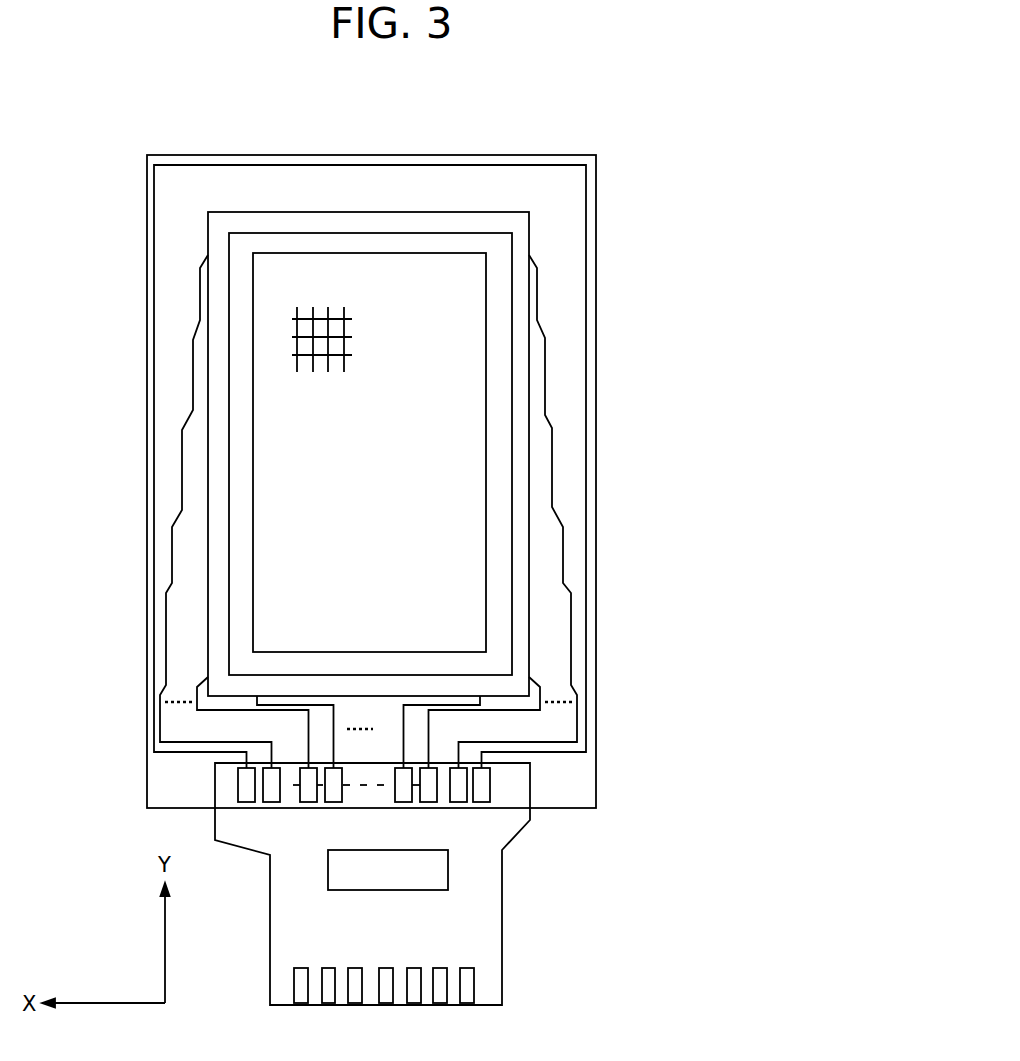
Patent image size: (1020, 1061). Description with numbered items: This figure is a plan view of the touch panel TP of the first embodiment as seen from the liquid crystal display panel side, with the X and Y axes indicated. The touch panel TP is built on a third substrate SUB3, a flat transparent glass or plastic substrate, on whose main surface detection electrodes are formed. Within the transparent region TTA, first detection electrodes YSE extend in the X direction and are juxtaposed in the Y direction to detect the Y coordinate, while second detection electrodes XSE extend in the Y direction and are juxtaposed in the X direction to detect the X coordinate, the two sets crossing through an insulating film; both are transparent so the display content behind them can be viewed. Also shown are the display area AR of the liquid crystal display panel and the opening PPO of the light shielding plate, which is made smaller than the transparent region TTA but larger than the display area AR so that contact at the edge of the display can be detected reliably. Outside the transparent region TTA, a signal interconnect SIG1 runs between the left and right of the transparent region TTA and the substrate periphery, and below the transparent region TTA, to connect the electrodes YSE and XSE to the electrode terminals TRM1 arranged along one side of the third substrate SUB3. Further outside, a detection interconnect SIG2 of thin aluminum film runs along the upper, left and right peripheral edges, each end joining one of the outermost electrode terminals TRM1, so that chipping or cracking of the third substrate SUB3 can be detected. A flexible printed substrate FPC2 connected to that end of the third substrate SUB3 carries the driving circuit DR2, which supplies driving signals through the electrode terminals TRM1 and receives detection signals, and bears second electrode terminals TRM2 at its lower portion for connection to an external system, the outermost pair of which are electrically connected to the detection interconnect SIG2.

The touch panel TP is at (446, 443).
The third substrate SUB3 is at (606, 434).
The detection interconnect SIG2 is at (603, 384).
The signal interconnect SIG1 is at (580, 544).
The transparent region TTA is at (445, 203).
The opening of the light shielding plate PPO is at (525, 251).
The display area AR is at (447, 242).
The second detection electrodes XSE is at (358, 298).
The first detection electrodes YSE is at (359, 370).
The electrode terminals TRM1 is at (506, 790).
The flexible printed substrate FPC2 is at (516, 942).
The driving circuit DR2 is at (466, 865).
The second electrode terminals TRM2 is at (490, 994).